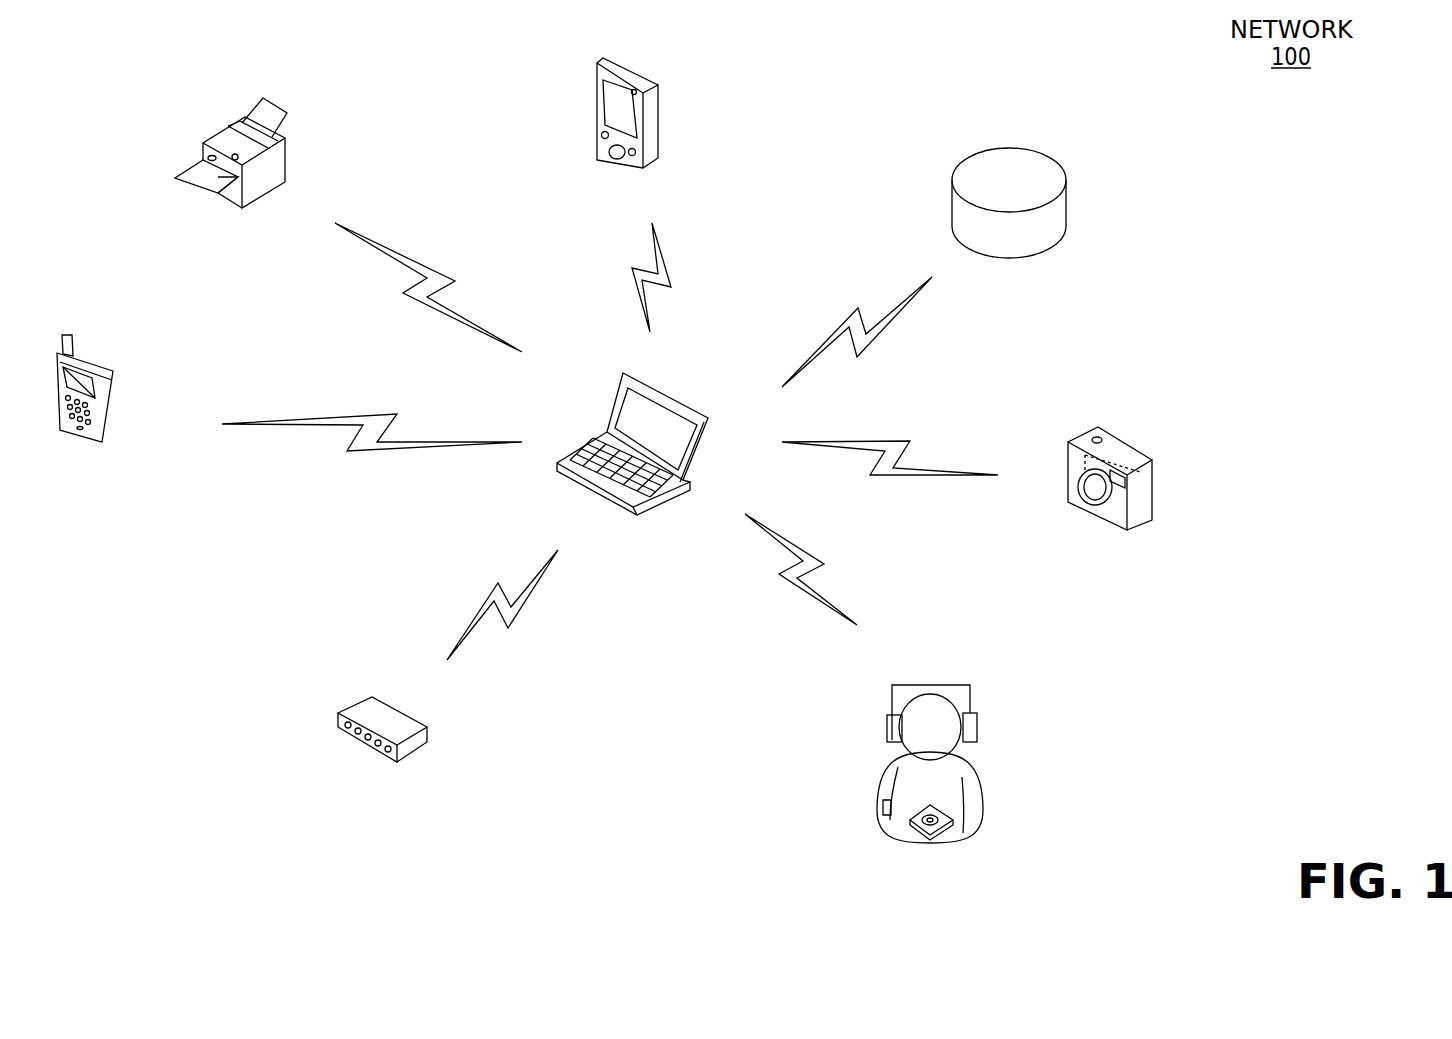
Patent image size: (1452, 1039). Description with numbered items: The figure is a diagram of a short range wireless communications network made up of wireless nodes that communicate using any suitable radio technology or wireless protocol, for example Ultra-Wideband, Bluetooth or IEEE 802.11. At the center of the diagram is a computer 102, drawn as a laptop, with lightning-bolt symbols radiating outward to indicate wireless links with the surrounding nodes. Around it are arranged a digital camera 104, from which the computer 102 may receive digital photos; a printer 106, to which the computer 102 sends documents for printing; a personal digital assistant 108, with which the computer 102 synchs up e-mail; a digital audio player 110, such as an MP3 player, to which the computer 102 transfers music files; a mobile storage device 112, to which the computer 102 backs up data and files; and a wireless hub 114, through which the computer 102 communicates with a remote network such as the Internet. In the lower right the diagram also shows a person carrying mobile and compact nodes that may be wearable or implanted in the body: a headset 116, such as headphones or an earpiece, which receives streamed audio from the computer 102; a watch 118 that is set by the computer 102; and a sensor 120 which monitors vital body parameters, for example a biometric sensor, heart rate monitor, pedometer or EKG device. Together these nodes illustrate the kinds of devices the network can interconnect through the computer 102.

The computer 102 is at (607, 400).
The digital camera 104 is at (1153, 500).
The printer 106 is at (285, 180).
The personal digital assistant (PDA) 108 is at (115, 405).
The digital audio player 110 is at (660, 137).
The mobile storage device 112 is at (1068, 230).
The wireless hub 114 is at (427, 727).
The headset 116 is at (977, 728).
The watch 118 is at (880, 807).
The sensor 120 is at (968, 828).